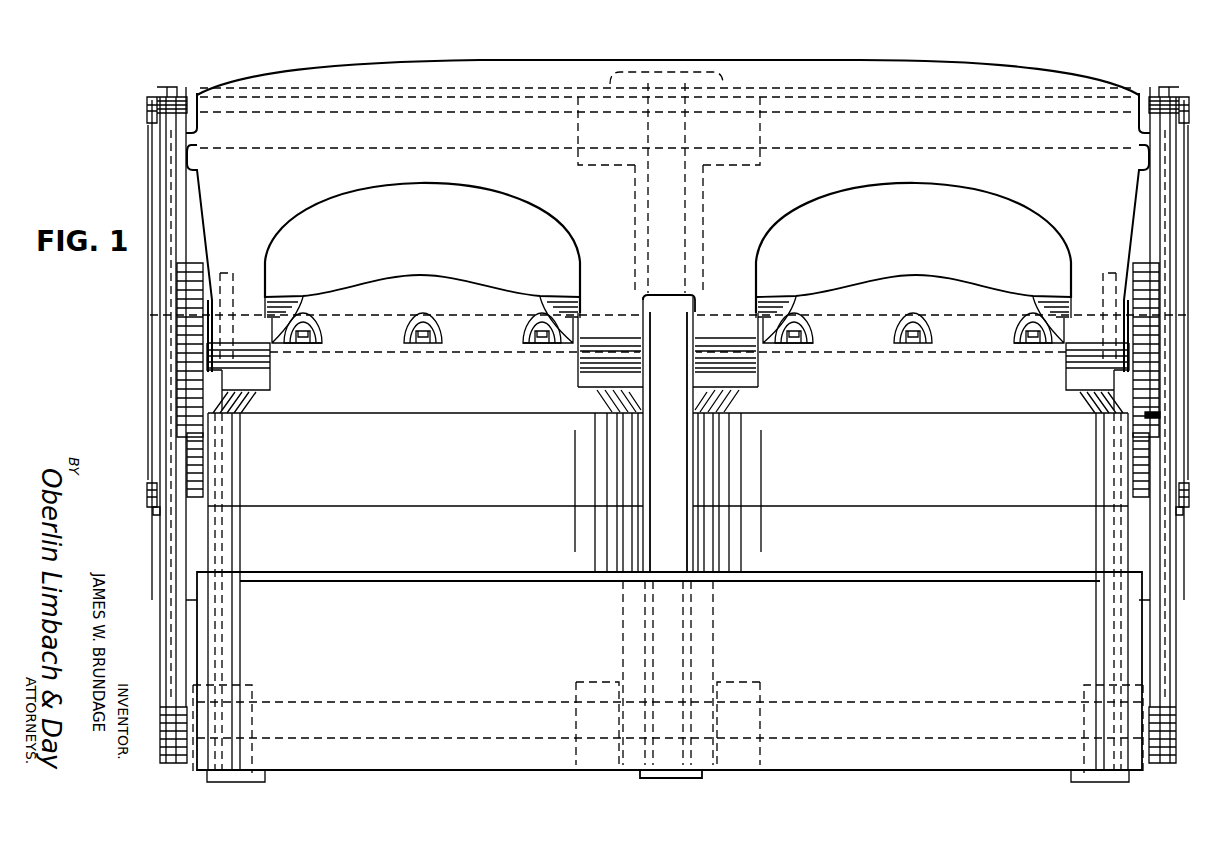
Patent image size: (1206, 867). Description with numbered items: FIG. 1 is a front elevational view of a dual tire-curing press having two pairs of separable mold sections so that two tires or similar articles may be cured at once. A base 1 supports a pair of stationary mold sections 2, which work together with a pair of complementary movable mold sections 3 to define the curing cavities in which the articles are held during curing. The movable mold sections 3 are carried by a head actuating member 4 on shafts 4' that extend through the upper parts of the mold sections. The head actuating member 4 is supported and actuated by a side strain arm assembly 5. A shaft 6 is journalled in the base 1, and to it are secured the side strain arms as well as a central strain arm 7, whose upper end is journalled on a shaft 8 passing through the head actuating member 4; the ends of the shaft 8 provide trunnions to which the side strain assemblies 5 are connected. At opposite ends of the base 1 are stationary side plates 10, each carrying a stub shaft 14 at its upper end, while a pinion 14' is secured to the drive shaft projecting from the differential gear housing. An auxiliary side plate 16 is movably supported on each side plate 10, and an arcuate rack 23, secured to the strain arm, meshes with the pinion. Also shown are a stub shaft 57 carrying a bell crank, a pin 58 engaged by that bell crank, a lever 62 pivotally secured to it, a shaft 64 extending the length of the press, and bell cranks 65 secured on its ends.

The base 1 is at (669, 675).
The stationary mold sections 2 is at (566, 491).
The complementary mold sections 3 is at (564, 591).
The head actuating member 4 is at (575, 262).
The shafts 4' is at (913, 291).
The side strain arm assembly 5 is at (1158, 415).
The shaft 6 is at (831, 700).
The central strain arm 7 is at (670, 452).
The shaft 8 is at (1043, 150).
The stationary side plates 10 is at (217, 385).
The stub shaft 14 is at (1084, 488).
The pinion 14' is at (242, 487).
The auxiliary side plate 16 is at (222, 385).
The rack 23 is at (232, 403).
The stub shaft 57 is at (148, 490).
The pin 58 is at (155, 509).
The lever 62 is at (148, 176).
The shaft 64 is at (1150, 88).
The bell cranks 65 is at (147, 112).